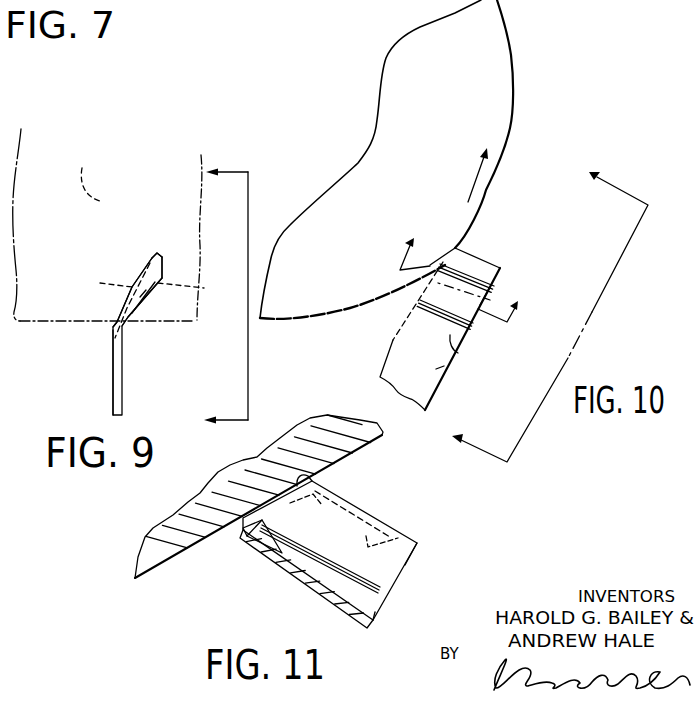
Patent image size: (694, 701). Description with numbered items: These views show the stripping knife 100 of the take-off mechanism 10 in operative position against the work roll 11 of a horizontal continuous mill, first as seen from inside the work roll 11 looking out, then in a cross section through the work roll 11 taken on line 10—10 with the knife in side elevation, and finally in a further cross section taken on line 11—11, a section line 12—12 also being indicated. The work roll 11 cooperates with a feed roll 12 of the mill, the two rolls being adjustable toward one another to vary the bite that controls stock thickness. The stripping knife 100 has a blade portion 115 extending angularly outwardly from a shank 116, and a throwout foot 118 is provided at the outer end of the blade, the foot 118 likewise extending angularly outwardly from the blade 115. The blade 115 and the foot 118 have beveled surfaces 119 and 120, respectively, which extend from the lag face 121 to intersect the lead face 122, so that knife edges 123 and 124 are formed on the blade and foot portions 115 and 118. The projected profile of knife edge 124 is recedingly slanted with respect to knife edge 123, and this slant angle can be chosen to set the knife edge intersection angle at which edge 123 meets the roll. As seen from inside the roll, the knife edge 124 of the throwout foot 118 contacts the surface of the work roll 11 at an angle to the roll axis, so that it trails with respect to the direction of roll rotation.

In FIG. 9, the stripping knife 100 is at (127, 380).
In FIG. 10, the stripping knife 100 is at (388, 346).
In FIG. 11, the stripping knife 100 is at (410, 589).
In FIG. 9, the blade portion 115 is at (132, 313).
In FIG. 10, the blade portion 115 is at (465, 310).
In FIG. 11, the blade portion 115 is at (374, 594).
In FIG. 9, the shank 116 is at (113, 368).
In FIG. 10, the shank 116 is at (441, 370).
In FIG. 9, the throwout foot 118 is at (158, 279).
In FIG. 10, the throwout foot 118 is at (472, 268).
In FIG. 11, the throwout foot 118 is at (333, 524).
In FIG. 9, the beveled surface 119 is at (102, 285).
In FIG. 11, the beveled surface 119 is at (248, 535).
In FIG. 9, the beveled surface 120 is at (144, 264).
In FIG. 11, the beveled surface 120 is at (318, 491).
In FIG. 9, the lag face 121 is at (143, 293).
In FIG. 10, the lag face 121 is at (521, 297).
In FIG. 11, the lag face 121 is at (392, 568).
In FIG. 9, the lead face 122 is at (199, 289).
In FIG. 10, the lead face 122 is at (458, 345).
In FIG. 11, the lead face 122 is at (398, 538).
In FIG. 9, the knife edge 123 is at (132, 282).
In FIG. 10, the knife edge 123 is at (423, 289).
In FIG. 11, the knife edge 123 is at (253, 517).
In FIG. 9, the knife edge 124 is at (155, 255).
In FIG. 10, the knife edge 124 is at (447, 250).
In FIG. 11, the knife edge 124 is at (337, 477).
In FIG. 9, the take-off mechanism 10 is at (226, 296).
In FIG. 9, the work roll 11 is at (95, 179).
In FIG. 10, the work roll 11 is at (461, 159).
In FIG. 11, the work roll 11 is at (307, 462).
In FIG. 10, the feed roll 12 is at (534, 309).